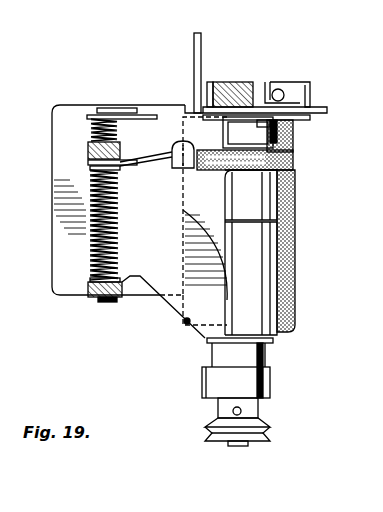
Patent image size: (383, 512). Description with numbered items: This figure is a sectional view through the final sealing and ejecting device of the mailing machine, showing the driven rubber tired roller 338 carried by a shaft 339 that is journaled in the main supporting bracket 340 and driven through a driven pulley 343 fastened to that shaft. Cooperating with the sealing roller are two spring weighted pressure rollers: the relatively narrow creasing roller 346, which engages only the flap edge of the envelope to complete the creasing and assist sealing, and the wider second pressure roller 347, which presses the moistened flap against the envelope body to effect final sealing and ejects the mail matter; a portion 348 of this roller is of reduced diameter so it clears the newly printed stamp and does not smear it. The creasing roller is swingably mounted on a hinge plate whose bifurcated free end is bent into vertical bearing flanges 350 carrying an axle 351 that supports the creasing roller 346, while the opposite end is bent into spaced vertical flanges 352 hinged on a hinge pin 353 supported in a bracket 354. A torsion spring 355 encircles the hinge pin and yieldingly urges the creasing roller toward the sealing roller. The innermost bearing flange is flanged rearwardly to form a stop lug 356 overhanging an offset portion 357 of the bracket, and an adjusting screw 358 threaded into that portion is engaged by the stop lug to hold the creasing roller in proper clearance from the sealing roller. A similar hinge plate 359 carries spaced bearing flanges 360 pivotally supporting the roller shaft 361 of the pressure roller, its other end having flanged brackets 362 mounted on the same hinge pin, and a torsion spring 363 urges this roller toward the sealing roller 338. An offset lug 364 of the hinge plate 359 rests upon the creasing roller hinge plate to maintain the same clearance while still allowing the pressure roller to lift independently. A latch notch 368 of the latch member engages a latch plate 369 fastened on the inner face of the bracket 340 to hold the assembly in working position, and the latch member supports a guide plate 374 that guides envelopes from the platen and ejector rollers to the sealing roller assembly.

The driven rubber tired roller 338 is at (295, 278).
The shaft 339 is at (242, 447).
The bracket 340 is at (252, 385).
The driven pulley 343 is at (263, 437).
The creasing roller 346 is at (290, 138).
The second pressure roller 347 is at (263, 247).
The portion of reduced diameter 348 is at (267, 210).
The vertical bearing flanges 350 is at (303, 122).
The axle 351 is at (258, 104).
The spaced vertical flanges 352 is at (97, 108).
The hinge pin 353 is at (102, 107).
The bracket 354 is at (88, 148).
The torsion spring 355 is at (117, 133).
The stop lug 356 is at (280, 88).
The offset portion 357 is at (307, 82).
The adjusting screw 358 is at (285, 97).
The hinge plate 359 is at (173, 307).
The bearing flanges 360 is at (270, 172).
The roller shaft 361 is at (250, 357).
The flanged brackets 362 is at (88, 170).
The torsion spring 363 is at (115, 240).
The offset lug 364 is at (186, 152).
The latch notch 368 is at (187, 103).
The latch plate 369 is at (203, 80).
The guide plate 374 is at (58, 222).